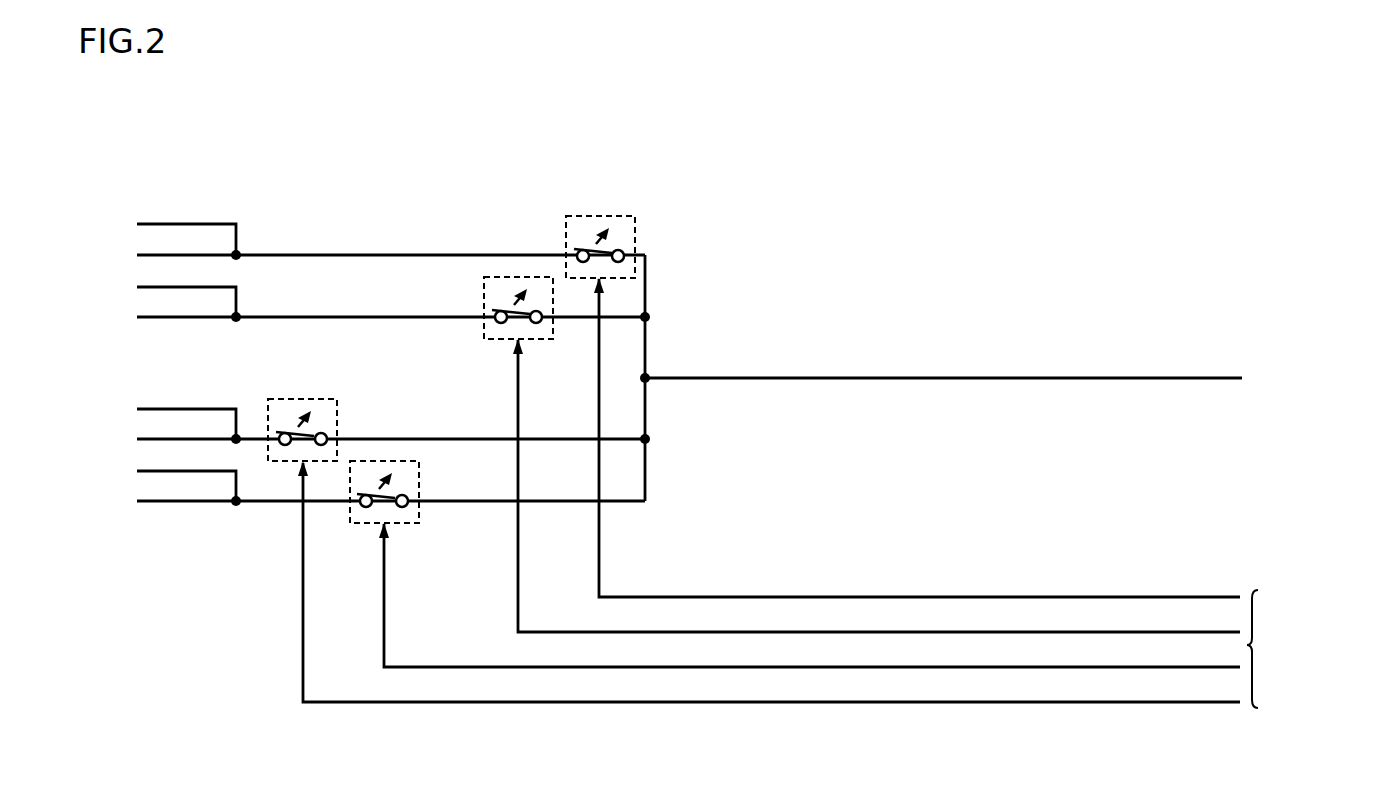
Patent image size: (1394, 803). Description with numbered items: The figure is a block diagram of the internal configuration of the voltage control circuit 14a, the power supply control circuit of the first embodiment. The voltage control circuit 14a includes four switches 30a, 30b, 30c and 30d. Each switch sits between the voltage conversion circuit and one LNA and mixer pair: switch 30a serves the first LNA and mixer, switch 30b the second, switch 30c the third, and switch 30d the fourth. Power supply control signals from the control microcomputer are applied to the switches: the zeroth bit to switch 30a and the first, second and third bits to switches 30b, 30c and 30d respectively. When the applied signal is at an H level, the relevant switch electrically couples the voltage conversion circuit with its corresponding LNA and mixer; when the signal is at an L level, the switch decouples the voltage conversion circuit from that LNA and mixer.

The voltage control circuit 14a is at (1290, 137).
The switch 30a is at (599, 215).
The switch 30b is at (484, 331).
The switch 30c is at (304, 397).
The switch 30d is at (419, 512).